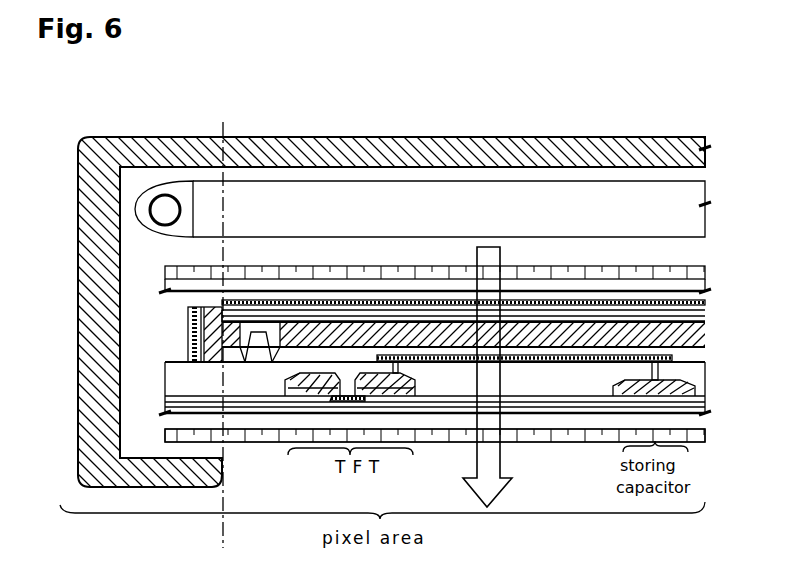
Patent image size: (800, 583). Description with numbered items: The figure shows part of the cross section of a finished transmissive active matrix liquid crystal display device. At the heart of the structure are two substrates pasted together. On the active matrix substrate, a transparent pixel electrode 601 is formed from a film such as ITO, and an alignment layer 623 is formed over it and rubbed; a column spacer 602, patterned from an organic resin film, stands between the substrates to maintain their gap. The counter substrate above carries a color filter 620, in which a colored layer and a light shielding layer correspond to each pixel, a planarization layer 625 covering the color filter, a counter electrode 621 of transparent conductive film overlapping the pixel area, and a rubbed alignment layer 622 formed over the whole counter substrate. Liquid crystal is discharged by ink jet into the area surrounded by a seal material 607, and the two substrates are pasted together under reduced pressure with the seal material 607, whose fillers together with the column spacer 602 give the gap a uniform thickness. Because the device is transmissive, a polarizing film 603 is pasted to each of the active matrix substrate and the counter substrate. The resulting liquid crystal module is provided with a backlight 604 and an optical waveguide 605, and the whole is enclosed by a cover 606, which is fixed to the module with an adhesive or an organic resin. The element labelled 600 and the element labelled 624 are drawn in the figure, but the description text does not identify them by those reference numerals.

The lower polarizing plate / optical sheet 600 is at (705, 421).
The pixel electrode 601 is at (537, 358).
The column spacer 602 is at (263, 352).
The polarizing film 603 is at (546, 271).
The backlight 604 is at (165, 208).
The optical waveguide 605 is at (437, 198).
The cover 606 is at (292, 152).
The seal material 607 is at (190, 345).
The color filter 620 is at (705, 289).
The counter electrode 621 is at (705, 316).
The alignment layer 622 is at (707, 326).
The alignment layer 623 is at (708, 362).
The pixel electrode 624 is at (708, 350).
The planarization layer 625 is at (705, 300).